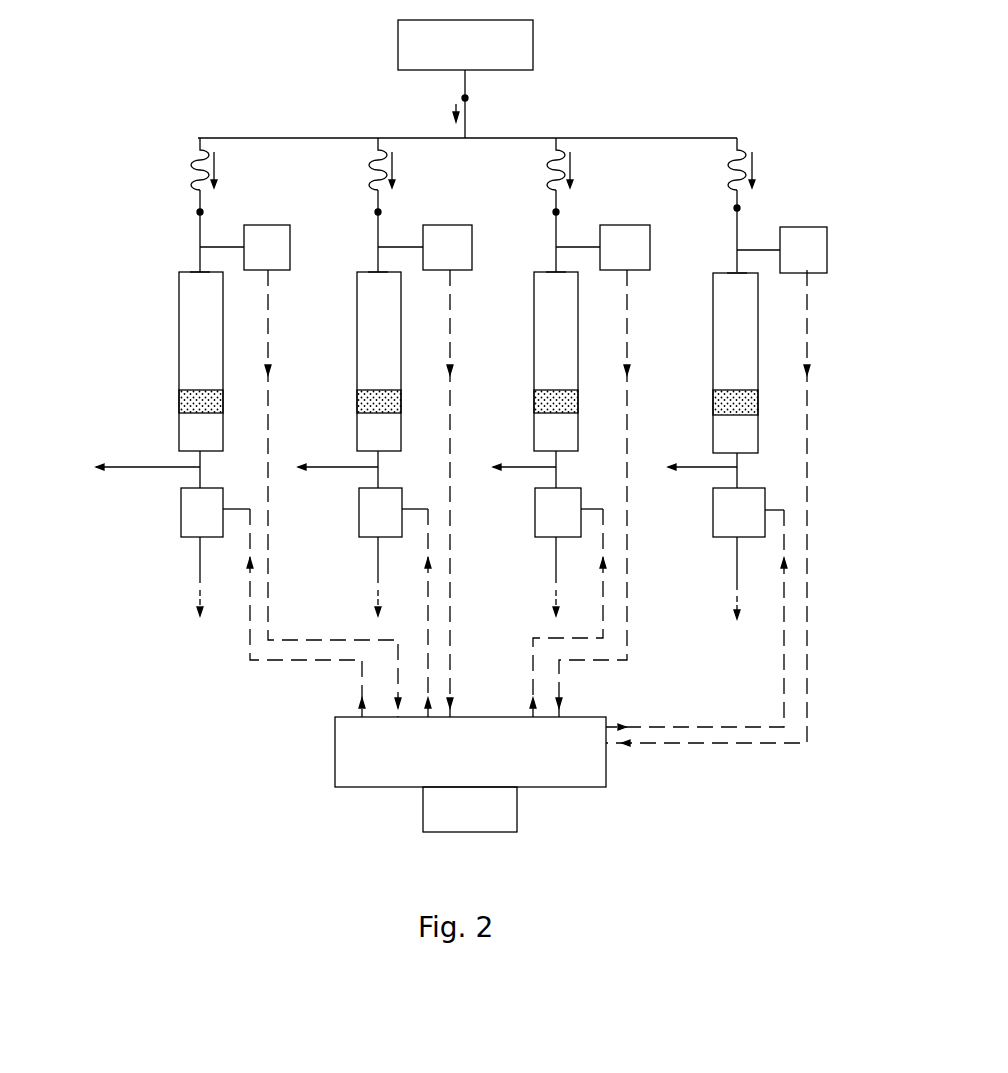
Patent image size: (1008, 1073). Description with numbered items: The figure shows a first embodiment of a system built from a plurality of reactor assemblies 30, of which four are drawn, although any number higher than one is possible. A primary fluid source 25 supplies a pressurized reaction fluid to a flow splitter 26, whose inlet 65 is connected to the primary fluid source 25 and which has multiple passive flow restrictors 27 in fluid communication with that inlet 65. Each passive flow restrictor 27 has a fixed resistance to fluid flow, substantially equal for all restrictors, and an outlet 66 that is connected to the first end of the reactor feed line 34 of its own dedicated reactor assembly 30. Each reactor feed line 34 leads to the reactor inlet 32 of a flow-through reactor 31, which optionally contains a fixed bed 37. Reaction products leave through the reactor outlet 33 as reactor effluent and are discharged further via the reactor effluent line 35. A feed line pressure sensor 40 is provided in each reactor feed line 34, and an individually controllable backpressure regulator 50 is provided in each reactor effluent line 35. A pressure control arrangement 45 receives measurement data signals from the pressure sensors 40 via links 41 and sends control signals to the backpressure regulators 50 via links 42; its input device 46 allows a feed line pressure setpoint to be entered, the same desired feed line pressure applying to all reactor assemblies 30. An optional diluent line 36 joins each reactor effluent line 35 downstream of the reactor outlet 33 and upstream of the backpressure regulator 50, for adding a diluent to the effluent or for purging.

The primary fluid source 25 is at (533, 42).
The flow splitter 26 is at (468, 120).
The inlet 65 is at (468, 96).
The passive flow restrictor 27 is at (185, 170).
The reactor assembly 30 is at (155, 298).
The flow-through reactor 31 is at (180, 343).
The reactor inlet 32 is at (197, 271).
The reactor outlet 33 is at (200, 453).
The reactor feed line 34 is at (196, 232).
The reactor effluent line 35 is at (199, 549).
The diluent line 36 is at (124, 468).
The fixed bed 37 is at (223, 402).
The feed line pressure sensor 40 is at (266, 224).
The link 41 is at (272, 624).
The link 42 is at (249, 652).
The pressure control arrangement 45 is at (598, 787).
The input device 46 is at (490, 832).
The backpressure regulator 50 is at (181, 516).
The outlet 66 is at (203, 211).